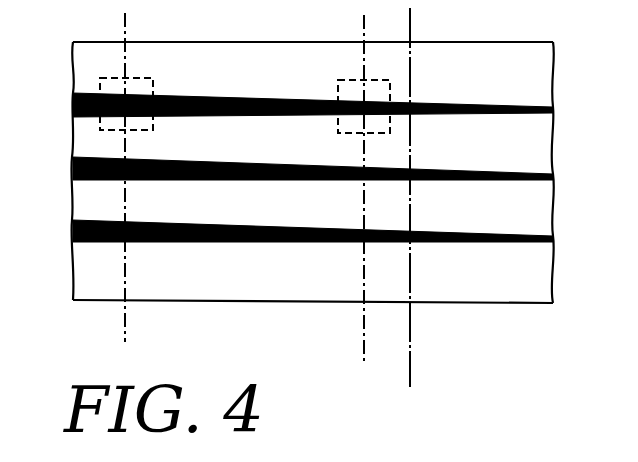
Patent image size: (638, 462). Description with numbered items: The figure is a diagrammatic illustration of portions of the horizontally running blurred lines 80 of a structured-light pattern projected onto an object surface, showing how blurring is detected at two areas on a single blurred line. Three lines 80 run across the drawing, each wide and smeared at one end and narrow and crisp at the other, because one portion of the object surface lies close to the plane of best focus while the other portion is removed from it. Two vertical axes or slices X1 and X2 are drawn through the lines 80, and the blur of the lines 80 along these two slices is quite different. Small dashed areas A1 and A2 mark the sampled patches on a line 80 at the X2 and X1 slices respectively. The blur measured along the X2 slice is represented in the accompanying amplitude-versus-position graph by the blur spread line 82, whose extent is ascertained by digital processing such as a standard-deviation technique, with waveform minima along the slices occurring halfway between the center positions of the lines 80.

The blurred lines 80 is at (193, 96).
The blur spread line 82 is at (411, 22).
The sampling area A1 is at (140, 77).
The sampling area A2 is at (390, 80).
The X1 slice X1 is at (348, 189).
The X2 slice X2 is at (140, 182).